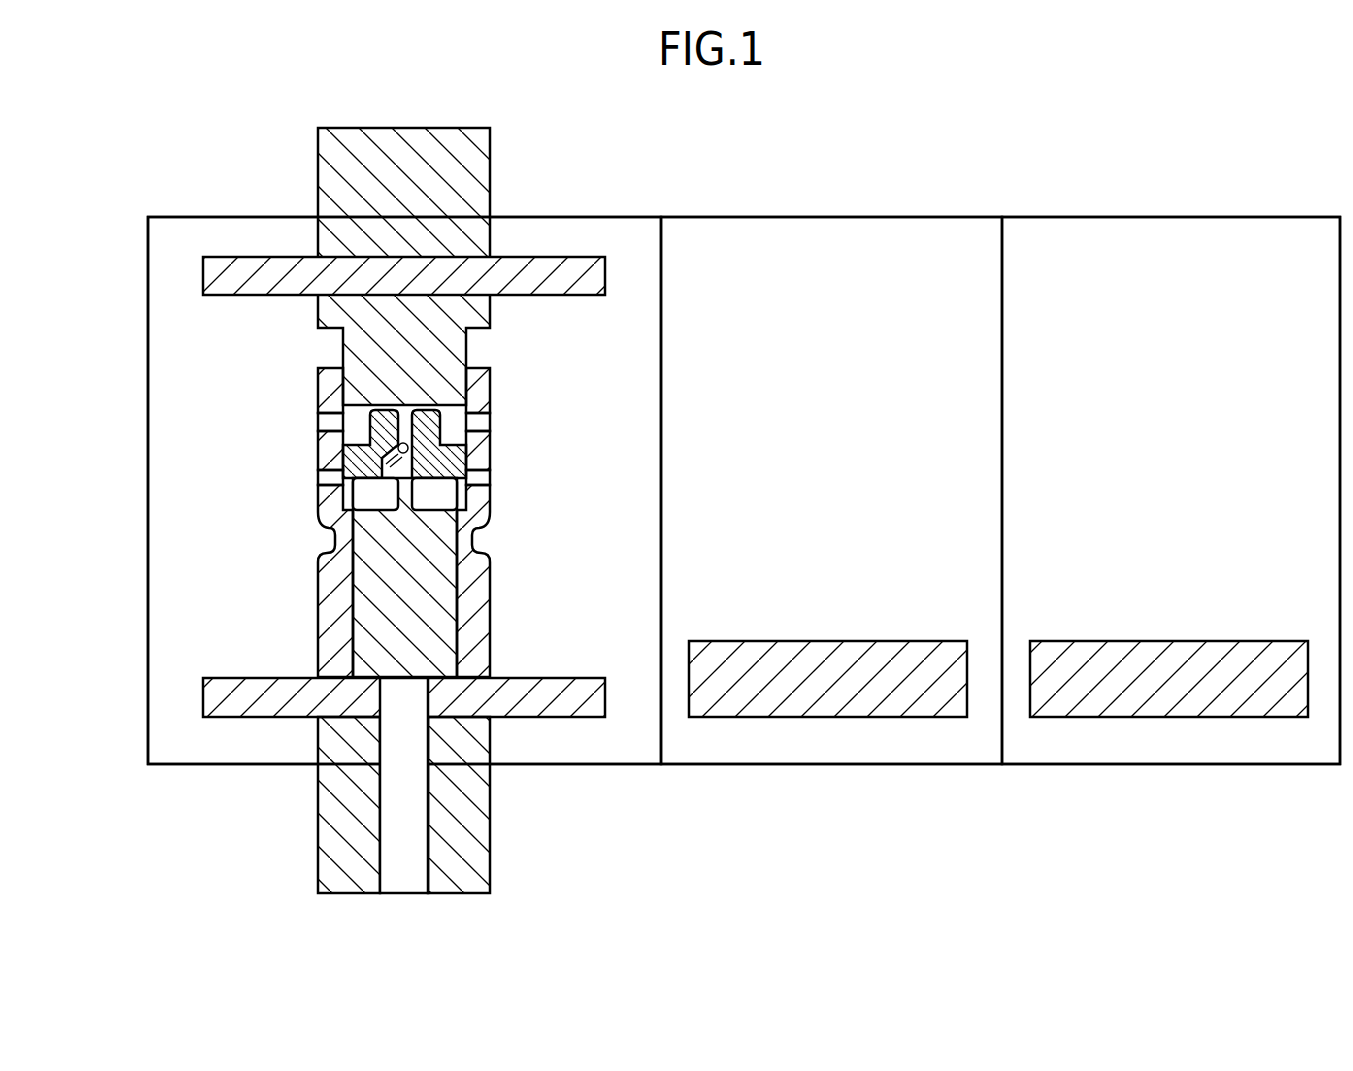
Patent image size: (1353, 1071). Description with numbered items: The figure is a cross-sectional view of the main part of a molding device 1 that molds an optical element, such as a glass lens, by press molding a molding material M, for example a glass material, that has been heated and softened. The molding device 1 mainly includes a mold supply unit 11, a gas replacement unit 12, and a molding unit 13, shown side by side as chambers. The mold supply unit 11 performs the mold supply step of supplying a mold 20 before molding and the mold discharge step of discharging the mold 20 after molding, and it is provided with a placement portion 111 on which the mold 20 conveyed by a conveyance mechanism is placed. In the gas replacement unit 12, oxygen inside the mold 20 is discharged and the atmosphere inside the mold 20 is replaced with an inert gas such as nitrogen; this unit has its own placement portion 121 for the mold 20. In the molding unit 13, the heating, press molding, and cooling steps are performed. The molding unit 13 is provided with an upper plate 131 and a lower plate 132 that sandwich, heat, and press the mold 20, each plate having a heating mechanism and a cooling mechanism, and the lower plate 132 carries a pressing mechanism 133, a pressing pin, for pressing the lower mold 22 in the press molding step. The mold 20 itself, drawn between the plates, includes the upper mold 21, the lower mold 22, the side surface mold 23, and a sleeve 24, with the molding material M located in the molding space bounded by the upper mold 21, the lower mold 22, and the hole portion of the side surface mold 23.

The molding device 1 is at (1296, 163).
The mold supply unit 11 is at (1166, 217).
The gas replacement unit 12 is at (826, 217).
The molding unit 13 is at (588, 217).
The placement portion 111 is at (1166, 717).
The placement portion 121 is at (825, 717).
The upper plate 131 is at (203, 272).
The lower plate 132 is at (203, 692).
The pressing mechanism 133 is at (400, 893).
The mold 20 is at (312, 442).
The upper mold 21 is at (455, 418).
The lower mold 22 is at (439, 502).
The side surface mold 23 is at (365, 492).
The sleeve 24 is at (494, 589).
The molding material M is at (409, 450).